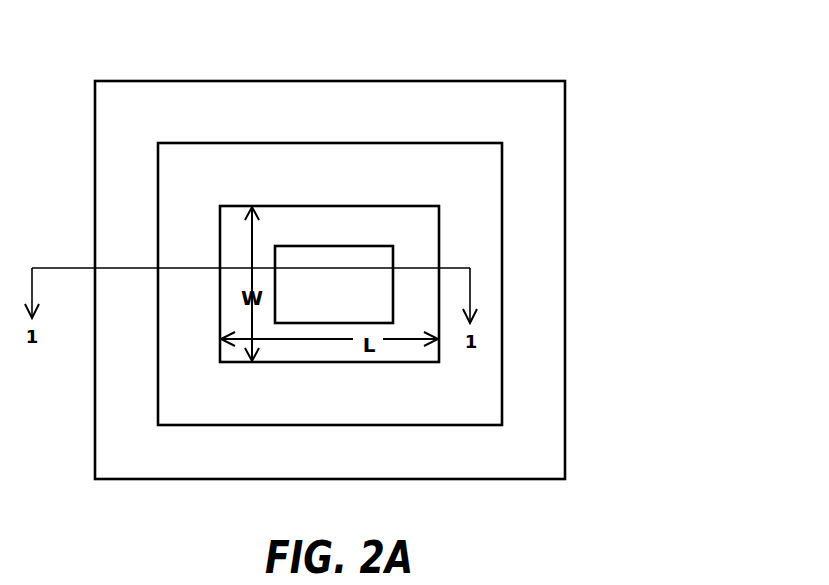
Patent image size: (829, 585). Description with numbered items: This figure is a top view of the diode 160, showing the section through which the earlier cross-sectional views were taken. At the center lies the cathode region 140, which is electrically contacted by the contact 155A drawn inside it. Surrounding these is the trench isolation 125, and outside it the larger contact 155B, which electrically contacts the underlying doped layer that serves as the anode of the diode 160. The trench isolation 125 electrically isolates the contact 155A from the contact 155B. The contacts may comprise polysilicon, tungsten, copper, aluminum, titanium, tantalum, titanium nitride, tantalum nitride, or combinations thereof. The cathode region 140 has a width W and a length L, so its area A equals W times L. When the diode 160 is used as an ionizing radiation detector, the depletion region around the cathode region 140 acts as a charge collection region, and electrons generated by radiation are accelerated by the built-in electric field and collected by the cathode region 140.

The contact 155B is at (168, 122).
The trench isolation 125 is at (213, 199).
The cathode region 140 is at (427, 241).
The contact 155A is at (355, 311).
The diode 160 is at (648, 82).